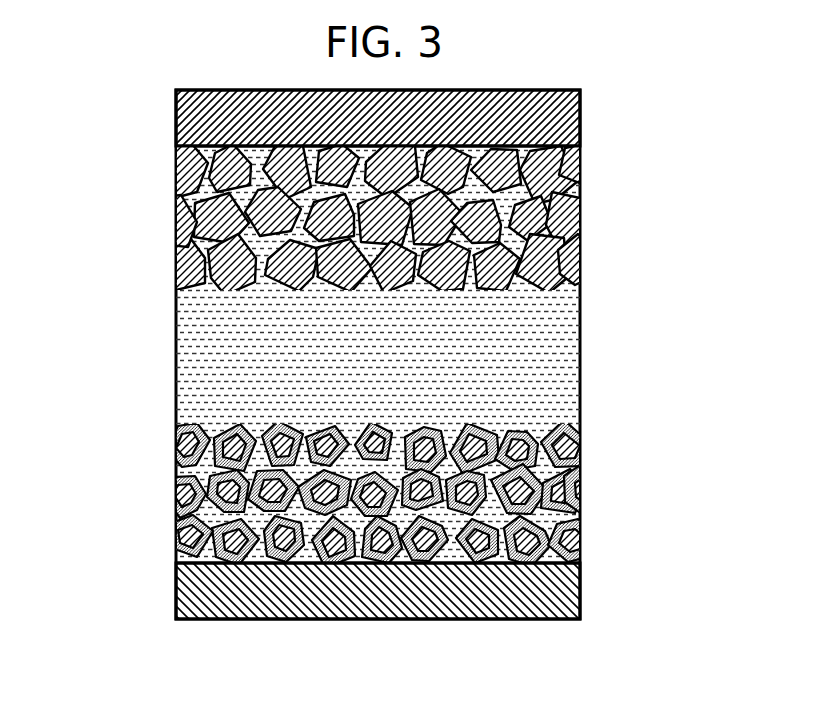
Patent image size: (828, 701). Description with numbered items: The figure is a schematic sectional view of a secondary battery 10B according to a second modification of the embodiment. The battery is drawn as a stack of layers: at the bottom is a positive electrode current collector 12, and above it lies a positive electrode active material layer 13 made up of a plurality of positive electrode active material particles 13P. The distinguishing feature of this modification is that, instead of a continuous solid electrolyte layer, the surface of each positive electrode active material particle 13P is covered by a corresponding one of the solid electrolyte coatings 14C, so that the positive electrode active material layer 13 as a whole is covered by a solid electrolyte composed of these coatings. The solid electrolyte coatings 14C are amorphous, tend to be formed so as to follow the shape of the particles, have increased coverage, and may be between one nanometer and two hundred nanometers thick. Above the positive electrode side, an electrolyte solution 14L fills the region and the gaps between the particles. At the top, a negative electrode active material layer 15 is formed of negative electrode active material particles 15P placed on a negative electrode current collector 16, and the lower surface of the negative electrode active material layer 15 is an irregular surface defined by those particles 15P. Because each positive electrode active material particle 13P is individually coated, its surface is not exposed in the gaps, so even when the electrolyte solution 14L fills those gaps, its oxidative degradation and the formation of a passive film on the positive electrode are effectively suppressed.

The secondary battery 10B is at (568, 59).
The positive electrode current collector 12 is at (560, 588).
The positive electrode active material layer 13 is at (595, 428).
The positive electrode active material particles 13P is at (178, 540).
The solid electrolyte coatings 14C is at (176, 563).
The electrolyte solution 14L is at (551, 353).
The negative electrode active material layer 15 is at (604, 153).
The negative electrode active material particles 15P is at (190, 216).
The negative electrode current collector 16 is at (580, 116).